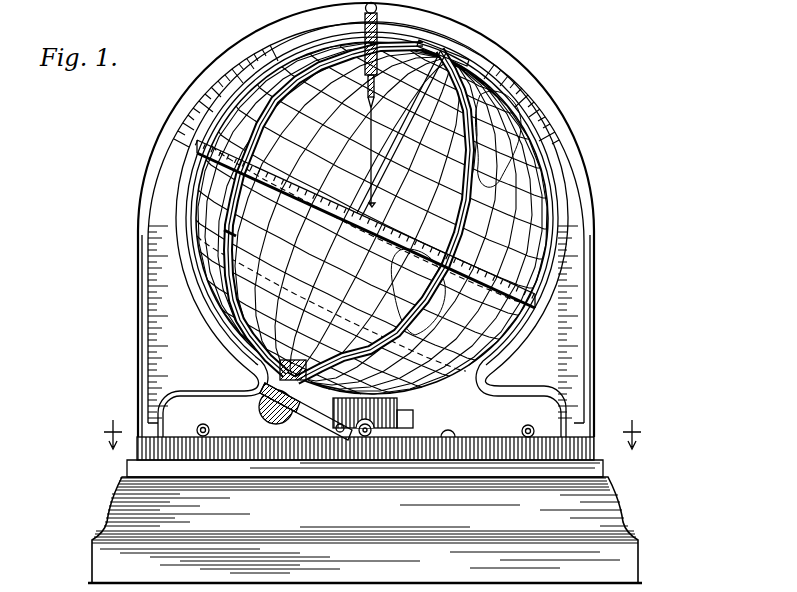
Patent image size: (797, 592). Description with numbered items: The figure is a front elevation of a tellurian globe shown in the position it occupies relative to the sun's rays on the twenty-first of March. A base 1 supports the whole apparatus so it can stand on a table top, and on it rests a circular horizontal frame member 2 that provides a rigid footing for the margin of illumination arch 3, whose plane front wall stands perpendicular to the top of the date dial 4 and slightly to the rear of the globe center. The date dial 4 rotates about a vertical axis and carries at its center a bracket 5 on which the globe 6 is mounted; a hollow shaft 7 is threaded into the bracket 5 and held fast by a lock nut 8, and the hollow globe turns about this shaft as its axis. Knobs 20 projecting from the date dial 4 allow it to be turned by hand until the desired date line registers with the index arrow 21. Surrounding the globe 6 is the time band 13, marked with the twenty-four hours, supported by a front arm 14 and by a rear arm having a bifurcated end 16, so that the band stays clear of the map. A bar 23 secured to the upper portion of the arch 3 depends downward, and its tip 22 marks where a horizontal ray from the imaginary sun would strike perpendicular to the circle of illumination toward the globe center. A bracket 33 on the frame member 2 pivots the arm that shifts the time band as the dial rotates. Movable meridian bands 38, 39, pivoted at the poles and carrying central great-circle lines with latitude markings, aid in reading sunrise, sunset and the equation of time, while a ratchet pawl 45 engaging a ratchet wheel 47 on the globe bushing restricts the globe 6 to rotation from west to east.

The base 1 is at (622, 513).
The circular horizontal frame member 2 is at (597, 445).
The margin of illumination arch 3 is at (576, 326).
The date dial 4 is at (486, 437).
The bracket 5 is at (312, 418).
The globe 6 is at (500, 364).
The hollow shaft 7 is at (375, 434).
The lock nut 8 is at (261, 427).
The time band 13 is at (325, 210).
The front arm 14 is at (383, 215).
The bifurcated end 16 is at (478, 62).
The knob 20 is at (529, 424).
The index arrow 21 is at (368, 434).
The tip 22 is at (376, 207).
The bar 23 is at (372, 197).
The bracket 33 is at (413, 412).
The movable meridian band 38 is at (231, 233).
The movable meridian band 39 is at (447, 316).
The ratchet pawl 45 is at (340, 432).
The ratchet wheel 47 is at (256, 400).